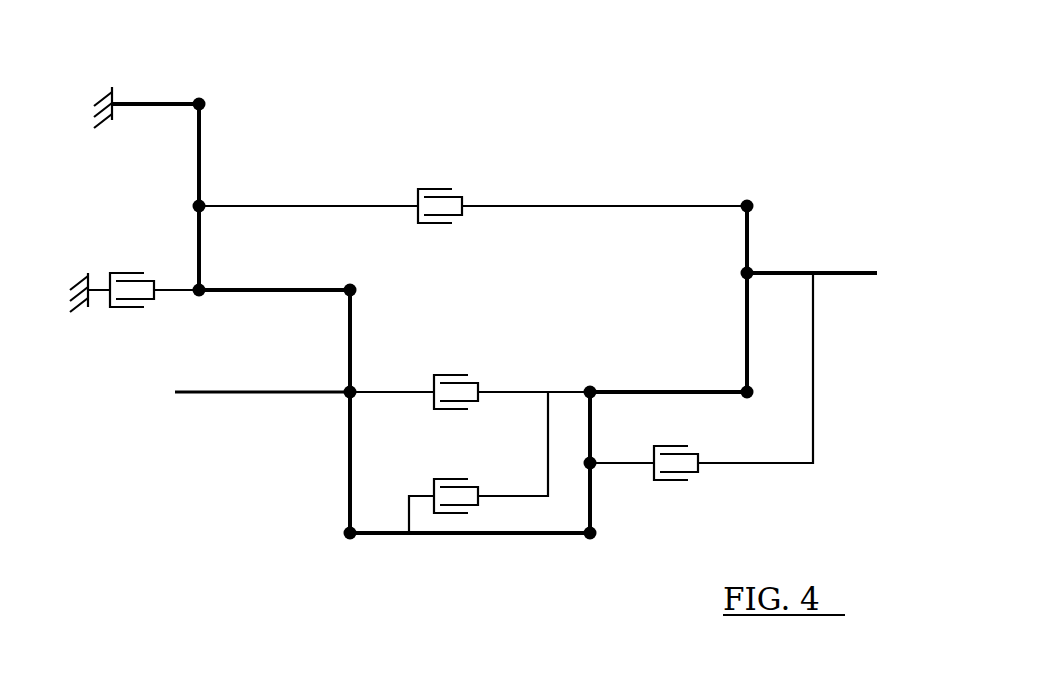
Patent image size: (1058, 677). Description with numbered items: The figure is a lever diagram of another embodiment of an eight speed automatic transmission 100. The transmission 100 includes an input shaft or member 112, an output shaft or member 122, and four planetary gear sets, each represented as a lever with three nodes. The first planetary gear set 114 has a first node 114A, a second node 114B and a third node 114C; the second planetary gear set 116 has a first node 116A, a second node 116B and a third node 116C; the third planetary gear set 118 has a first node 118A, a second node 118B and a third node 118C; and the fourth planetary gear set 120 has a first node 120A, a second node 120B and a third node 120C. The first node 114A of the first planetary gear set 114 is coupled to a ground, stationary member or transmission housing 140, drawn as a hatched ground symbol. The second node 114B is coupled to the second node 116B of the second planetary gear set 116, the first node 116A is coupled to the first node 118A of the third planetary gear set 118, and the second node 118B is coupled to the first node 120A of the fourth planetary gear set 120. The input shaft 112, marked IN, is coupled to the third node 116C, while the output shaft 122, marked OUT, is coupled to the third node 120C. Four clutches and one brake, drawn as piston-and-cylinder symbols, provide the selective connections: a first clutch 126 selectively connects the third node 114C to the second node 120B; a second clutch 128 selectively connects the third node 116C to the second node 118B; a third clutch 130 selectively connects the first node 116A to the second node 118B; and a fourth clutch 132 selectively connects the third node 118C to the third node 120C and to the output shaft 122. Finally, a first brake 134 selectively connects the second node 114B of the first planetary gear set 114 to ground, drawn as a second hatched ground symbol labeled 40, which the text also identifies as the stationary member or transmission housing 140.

The eight speed automatic transmission 100 is at (826, 122).
The input shaft 112 is at (235, 394).
The first planetary gear set 114 is at (193, 308).
The first node of first planetary gear set 114A is at (204, 101).
The second node of first planetary gear set 114B is at (204, 287).
The third node of first planetary gear set 114C is at (204, 203).
The second planetary gear set 116 is at (323, 470).
The first node of second planetary gear set 116A is at (354, 538).
The second node of second planetary gear set 116B is at (355, 287).
The third node of second planetary gear set 116C is at (347, 389).
The third planetary gear set 118 is at (619, 496).
The first node of third planetary gear set 118A is at (589, 539).
The second node of third planetary gear set 118B is at (588, 389).
The third node of third planetary gear set 118C is at (587, 464).
The fourth planetary gear set 120 is at (734, 188).
The first node of fourth planetary gear set 120A is at (745, 389).
The second node of fourth planetary gear set 120B is at (752, 204).
The third node of fourth planetary gear set 120C is at (751, 270).
The output shaft 122 is at (840, 276).
The first clutch 126 is at (432, 189).
The second clutch 128 is at (463, 375).
The third clutch 130 is at (463, 478).
The fourth clutch 132 is at (665, 447).
The first brake 134 is at (123, 272).
The transmission housing 140 is at (110, 92).
The ground 40 is at (92, 302).